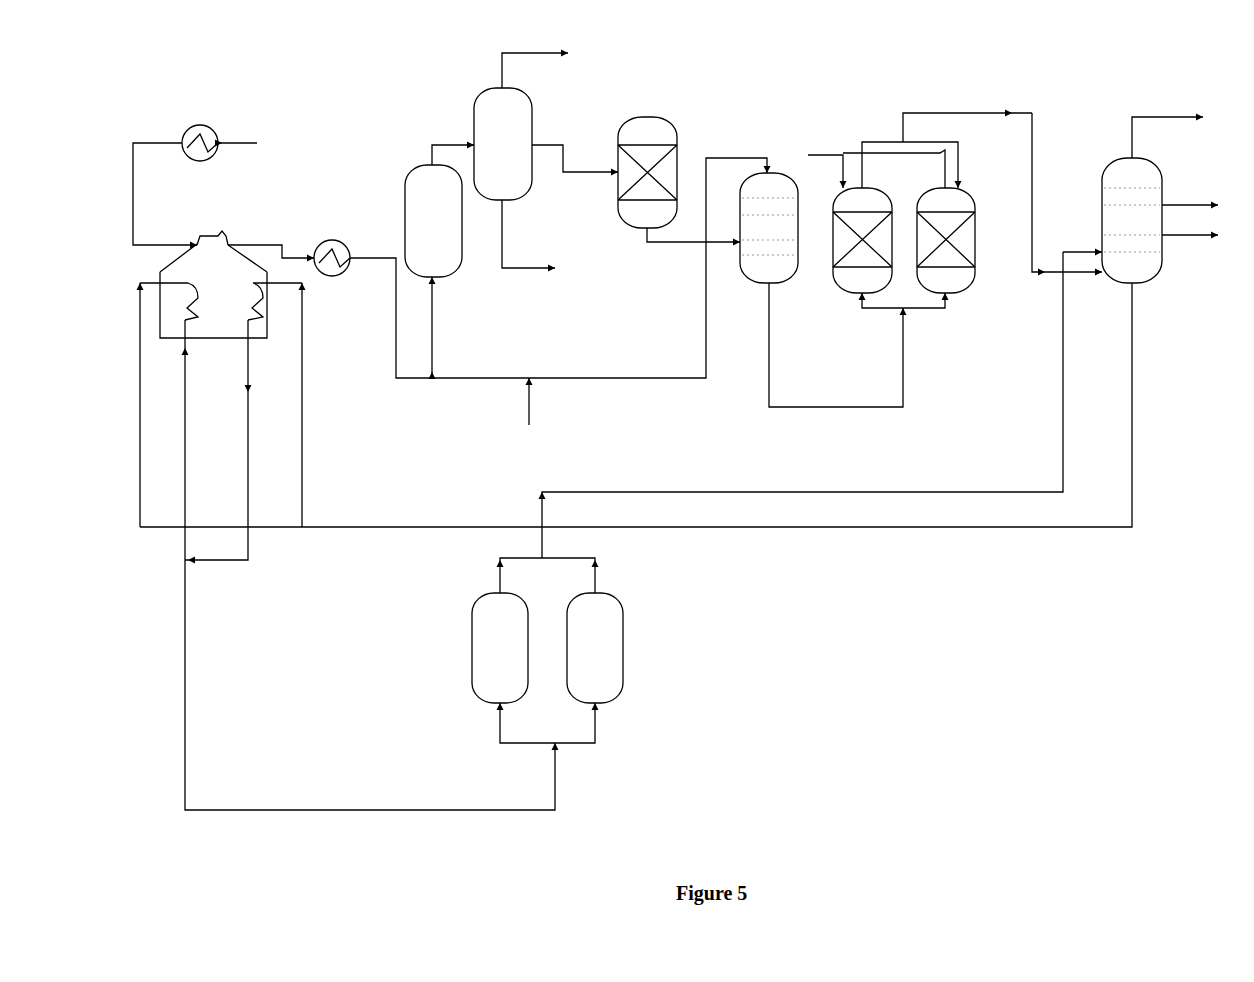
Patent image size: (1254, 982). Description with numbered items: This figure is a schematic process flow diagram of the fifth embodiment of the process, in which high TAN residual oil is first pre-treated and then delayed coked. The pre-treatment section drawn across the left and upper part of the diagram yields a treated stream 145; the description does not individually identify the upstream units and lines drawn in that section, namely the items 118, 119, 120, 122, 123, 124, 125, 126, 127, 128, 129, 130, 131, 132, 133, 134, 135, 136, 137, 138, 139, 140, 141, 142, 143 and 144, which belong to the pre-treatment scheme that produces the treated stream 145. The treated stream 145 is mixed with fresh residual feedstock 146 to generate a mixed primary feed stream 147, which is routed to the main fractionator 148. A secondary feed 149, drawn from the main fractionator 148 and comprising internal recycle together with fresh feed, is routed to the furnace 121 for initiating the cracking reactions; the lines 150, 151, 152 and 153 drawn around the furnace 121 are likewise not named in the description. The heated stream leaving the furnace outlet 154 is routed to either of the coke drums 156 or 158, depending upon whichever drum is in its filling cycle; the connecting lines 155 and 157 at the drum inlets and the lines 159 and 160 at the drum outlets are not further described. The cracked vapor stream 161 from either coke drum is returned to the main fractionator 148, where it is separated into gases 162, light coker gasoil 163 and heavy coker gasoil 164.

The heated feed stream 118 is at (257, 141).
The heat exchanger 119 is at (200, 125).
The feed stream 120 is at (133, 168).
The furnace 121 is at (160, 272).
The treated stream 122 is at (264, 243).
The heat exchanger 123 is at (330, 242).
The stream 124 is at (405, 380).
The combined stream 125 is at (432, 318).
The separator 126 is at (406, 192).
The overhead stream 127 is at (448, 145).
The separator 128 is at (488, 90).
The overhead stream 129 is at (546, 52).
The bottoms stream 130 is at (530, 270).
The stream 131 is at (603, 172).
The reactor 132 is at (667, 117).
The reactor effluent stream 133 is at (665, 243).
The separation column 134 is at (788, 282).
The recycle stream 135 is at (592, 379).
The make-up stream 136 is at (530, 403).
The bottoms stream 137 is at (850, 408).
The feed stream to reactor 138 is at (865, 312).
The reactor 139 is at (840, 203).
The feed stream to reactor 140 is at (946, 310).
The reactor 141 is at (975, 198).
The inlet stream 142 is at (840, 155).
The interconnecting stream 143 is at (876, 142).
The stream 144 is at (945, 142).
The treated stream 145 is at (978, 113).
The fresh residual feedstock 146 is at (1030, 272).
The mixed primary feed stream 147 is at (1078, 274).
The main fractionator 148 is at (1102, 210).
The secondary feed 149 is at (700, 527).
The recycle stream 150 is at (140, 433).
The recycle stream 151 is at (302, 420).
The outlet stream 152 is at (185, 388).
The outlet stream 153 is at (248, 450).
The heated stream from furnace outlet 154 is at (185, 720).
The feed stream to vessel 155 is at (498, 732).
The coke drum 156 is at (472, 655).
The feed stream to vessel 157 is at (596, 725).
The coke drum 158 is at (623, 660).
The outlet stream 159 is at (498, 575).
The outlet stream 160 is at (598, 572).
The cracked vapor stream 161 is at (658, 490).
The gases 162 is at (1168, 116).
The light coker gasoil 163 is at (1192, 205).
The heavy coker gasoil 164 is at (1185, 237).